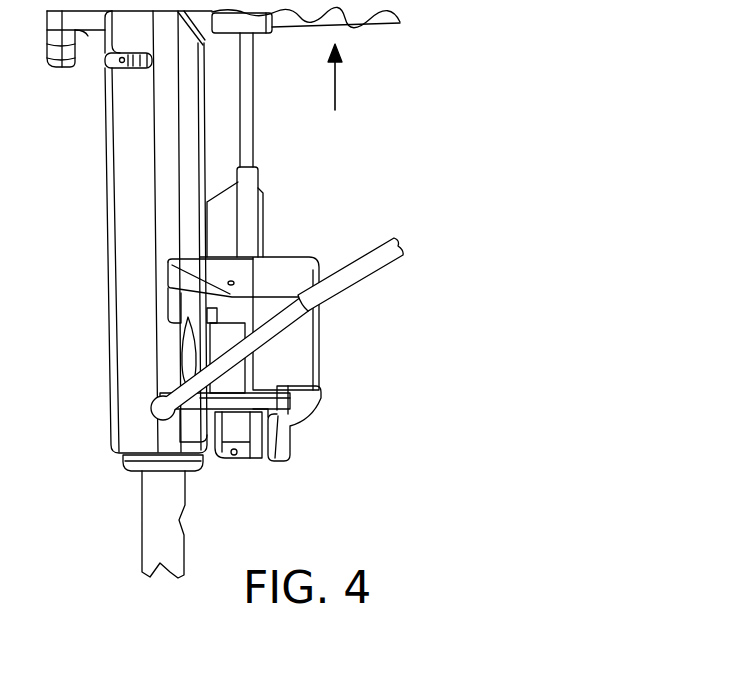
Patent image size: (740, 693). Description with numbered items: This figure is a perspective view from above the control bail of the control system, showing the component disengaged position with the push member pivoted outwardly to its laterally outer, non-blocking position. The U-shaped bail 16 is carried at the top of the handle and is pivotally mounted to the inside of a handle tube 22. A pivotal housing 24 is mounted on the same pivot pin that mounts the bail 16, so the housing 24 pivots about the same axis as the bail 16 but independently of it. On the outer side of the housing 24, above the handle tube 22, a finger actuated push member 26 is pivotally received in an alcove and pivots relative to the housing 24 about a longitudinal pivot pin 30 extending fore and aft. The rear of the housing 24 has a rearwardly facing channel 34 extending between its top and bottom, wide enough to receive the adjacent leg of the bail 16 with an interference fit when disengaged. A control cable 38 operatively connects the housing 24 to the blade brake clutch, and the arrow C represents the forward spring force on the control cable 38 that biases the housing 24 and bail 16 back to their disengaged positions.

The U-shaped bail 16 is at (382, 250).
The handle tube 22 is at (156, 492).
The pivotal housing 24 is at (302, 248).
The push member 26 is at (187, 338).
The longitudinal pivot pin 30 is at (228, 281).
The rearwardly facing channel 34 is at (259, 476).
The control cable 38 is at (248, 119).
The forward spring force arrow C is at (337, 85).